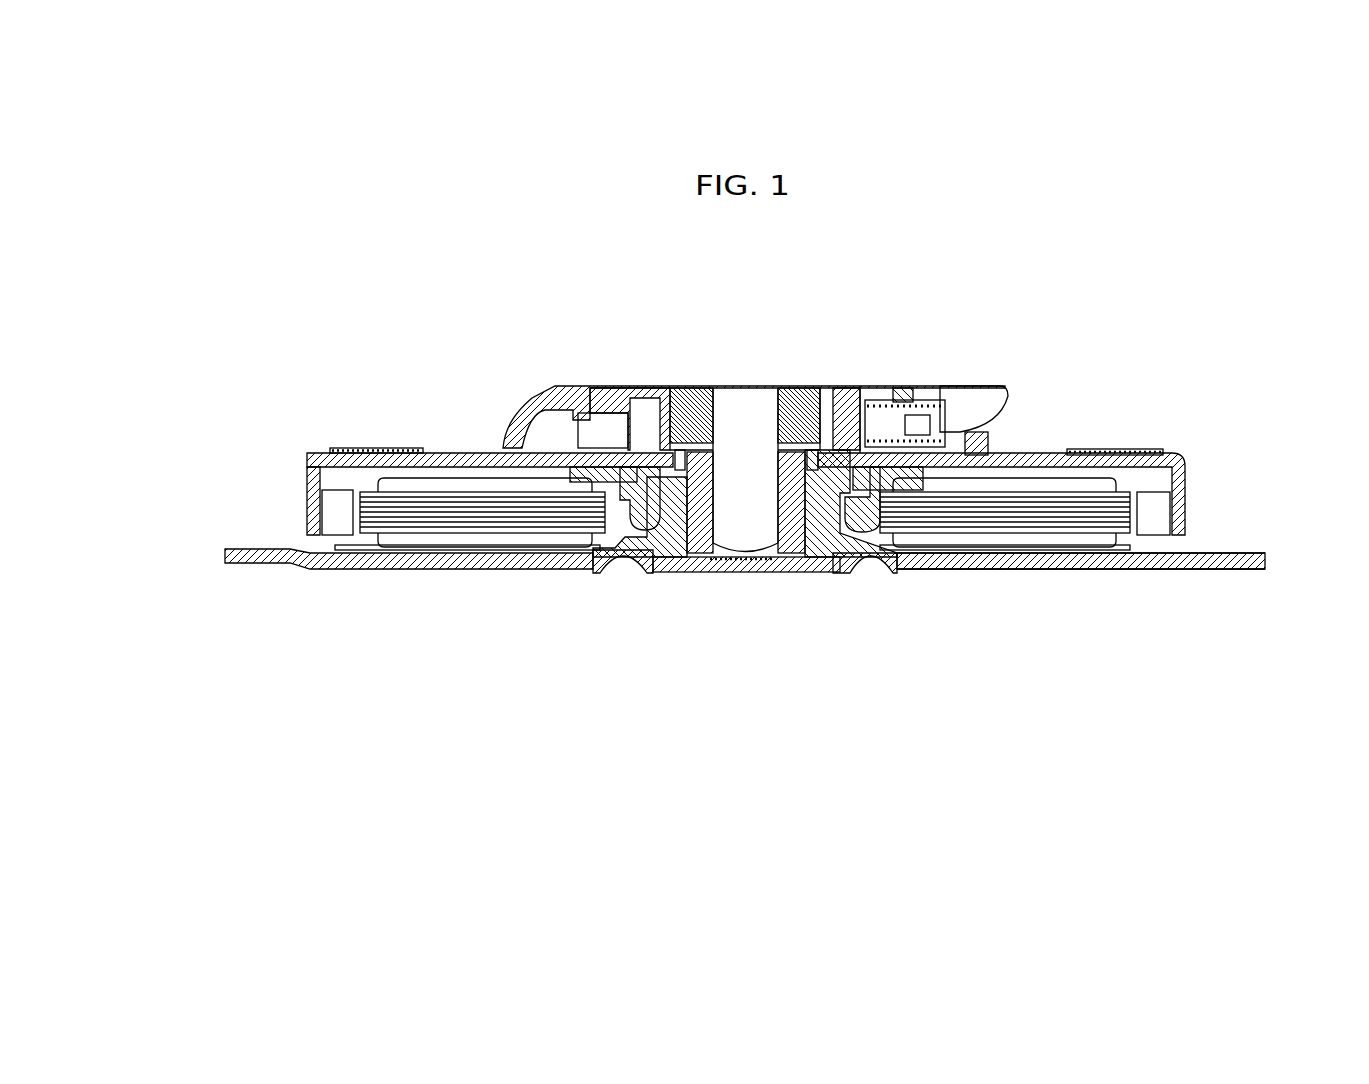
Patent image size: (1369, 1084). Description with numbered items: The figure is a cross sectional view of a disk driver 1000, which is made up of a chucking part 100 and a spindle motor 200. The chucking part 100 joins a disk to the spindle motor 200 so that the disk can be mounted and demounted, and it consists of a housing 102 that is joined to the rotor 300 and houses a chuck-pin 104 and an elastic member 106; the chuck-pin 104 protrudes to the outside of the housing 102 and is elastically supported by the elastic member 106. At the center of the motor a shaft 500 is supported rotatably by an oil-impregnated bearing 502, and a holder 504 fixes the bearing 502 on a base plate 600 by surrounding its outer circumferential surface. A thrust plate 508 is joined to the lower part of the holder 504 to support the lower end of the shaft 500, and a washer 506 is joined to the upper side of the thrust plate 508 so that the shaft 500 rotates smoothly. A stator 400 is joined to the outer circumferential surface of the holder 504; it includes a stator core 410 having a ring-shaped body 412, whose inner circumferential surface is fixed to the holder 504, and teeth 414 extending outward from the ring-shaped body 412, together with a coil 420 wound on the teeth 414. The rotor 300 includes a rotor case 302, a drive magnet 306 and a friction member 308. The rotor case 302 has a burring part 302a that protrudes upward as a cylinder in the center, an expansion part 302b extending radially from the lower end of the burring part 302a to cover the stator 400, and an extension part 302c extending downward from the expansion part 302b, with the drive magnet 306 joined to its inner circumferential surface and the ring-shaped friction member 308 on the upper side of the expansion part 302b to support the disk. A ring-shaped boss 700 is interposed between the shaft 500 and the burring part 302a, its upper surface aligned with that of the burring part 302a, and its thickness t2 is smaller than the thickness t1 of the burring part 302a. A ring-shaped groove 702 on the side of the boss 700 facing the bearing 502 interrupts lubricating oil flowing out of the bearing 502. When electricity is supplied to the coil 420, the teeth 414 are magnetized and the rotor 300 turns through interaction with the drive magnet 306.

The disk driver 1000 is at (1172, 303).
The chucking part 100 is at (1044, 393).
The housing 102 is at (558, 388).
The chuck-pin 104 is at (978, 404).
The elastic member 106 is at (918, 412).
The spindle motor 200 is at (1228, 489).
The rotor 300 is at (116, 417).
The rotor case 302 is at (199, 355).
The burring part 302a is at (665, 432).
The expansion part 302b is at (510, 453).
The extension part 302c is at (307, 477).
The drive magnet 306 is at (335, 522).
The friction member 308 is at (1122, 449).
The stator 400 is at (497, 770).
The stator core 410 is at (548, 700).
The ring-shaped body 412 is at (592, 545).
The teeth 414 is at (467, 540).
The coil 420 is at (423, 548).
The shaft 500 is at (750, 400).
The bearing 502 is at (793, 545).
The holder 504 is at (858, 555).
The washer 506 is at (762, 560).
The thrust plate 508 is at (673, 573).
The base plate 600 is at (945, 570).
The boss 700 is at (703, 390).
The ring-shaped groove 702 is at (806, 390).
The thickness of the burring part t1 is at (607, 440).
The thickness of the boss t2 is at (684, 431).